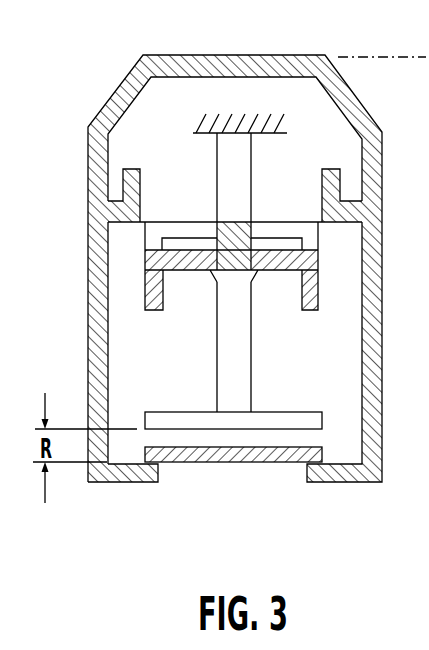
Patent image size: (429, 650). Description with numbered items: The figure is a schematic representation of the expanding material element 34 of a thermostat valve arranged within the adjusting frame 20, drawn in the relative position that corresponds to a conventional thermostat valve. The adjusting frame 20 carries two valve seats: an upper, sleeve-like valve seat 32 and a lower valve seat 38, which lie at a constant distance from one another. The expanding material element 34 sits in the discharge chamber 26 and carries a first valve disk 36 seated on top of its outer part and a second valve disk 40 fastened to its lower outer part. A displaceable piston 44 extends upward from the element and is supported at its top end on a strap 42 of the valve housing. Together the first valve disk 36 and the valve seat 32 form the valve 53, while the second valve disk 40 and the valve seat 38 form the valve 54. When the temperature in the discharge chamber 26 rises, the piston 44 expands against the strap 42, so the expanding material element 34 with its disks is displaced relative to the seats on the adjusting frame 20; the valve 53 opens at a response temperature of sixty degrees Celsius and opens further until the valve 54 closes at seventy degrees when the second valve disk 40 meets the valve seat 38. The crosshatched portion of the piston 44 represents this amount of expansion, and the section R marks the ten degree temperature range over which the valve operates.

The adjusting frame 20 is at (256, 56).
The discharge chamber 26 is at (331, 365).
The valve seat 32 is at (141, 192).
The expanding material element 34 is at (243, 343).
The first valve disk 36 is at (183, 228).
The valve seat 38 is at (158, 468).
The second valve disk 40 is at (167, 420).
The strap 42 is at (198, 124).
The piston 44 is at (243, 186).
The valve 53 is at (300, 196).
The valve 54 is at (263, 463).